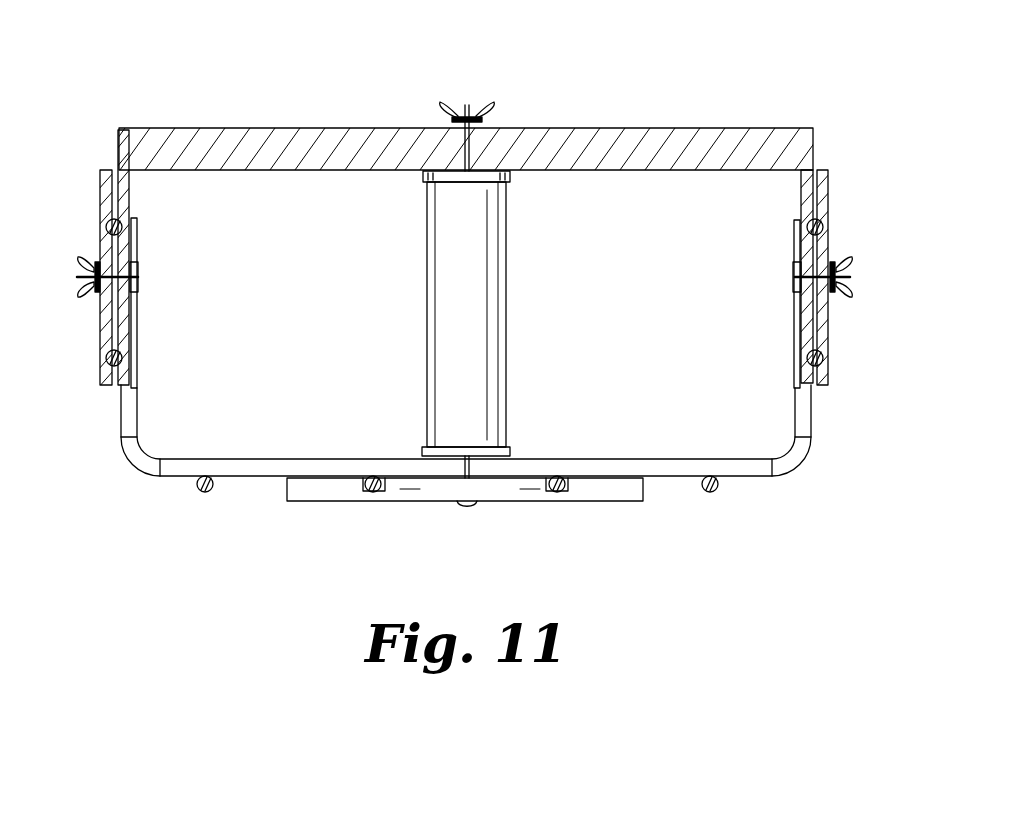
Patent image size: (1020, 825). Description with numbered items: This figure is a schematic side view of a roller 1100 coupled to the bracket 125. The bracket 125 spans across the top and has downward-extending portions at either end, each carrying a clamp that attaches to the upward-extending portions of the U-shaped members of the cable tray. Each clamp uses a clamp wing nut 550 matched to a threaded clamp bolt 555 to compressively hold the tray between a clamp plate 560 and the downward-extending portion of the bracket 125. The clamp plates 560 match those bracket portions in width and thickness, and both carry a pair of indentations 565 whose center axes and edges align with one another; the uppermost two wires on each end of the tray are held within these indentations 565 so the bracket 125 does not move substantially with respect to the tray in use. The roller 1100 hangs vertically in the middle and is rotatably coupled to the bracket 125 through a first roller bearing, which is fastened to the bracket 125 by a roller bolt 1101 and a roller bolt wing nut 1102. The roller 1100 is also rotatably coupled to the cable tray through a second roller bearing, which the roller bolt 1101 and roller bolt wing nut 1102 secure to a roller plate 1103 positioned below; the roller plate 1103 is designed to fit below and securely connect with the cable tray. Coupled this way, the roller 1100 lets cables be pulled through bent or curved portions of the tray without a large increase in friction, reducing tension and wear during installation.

The bracket 125 is at (285, 128).
The clamp plate 560 is at (107, 168).
The pair of indentations 565 is at (104, 222).
The clamp wing nut 550 is at (82, 262).
The clamp bolt 555 is at (139, 276).
The roller 1100 is at (427, 322).
The roller bolt wing nut 1102 is at (480, 100).
The roller bolt 1101 is at (468, 508).
The roller plate 1103 is at (286, 496).